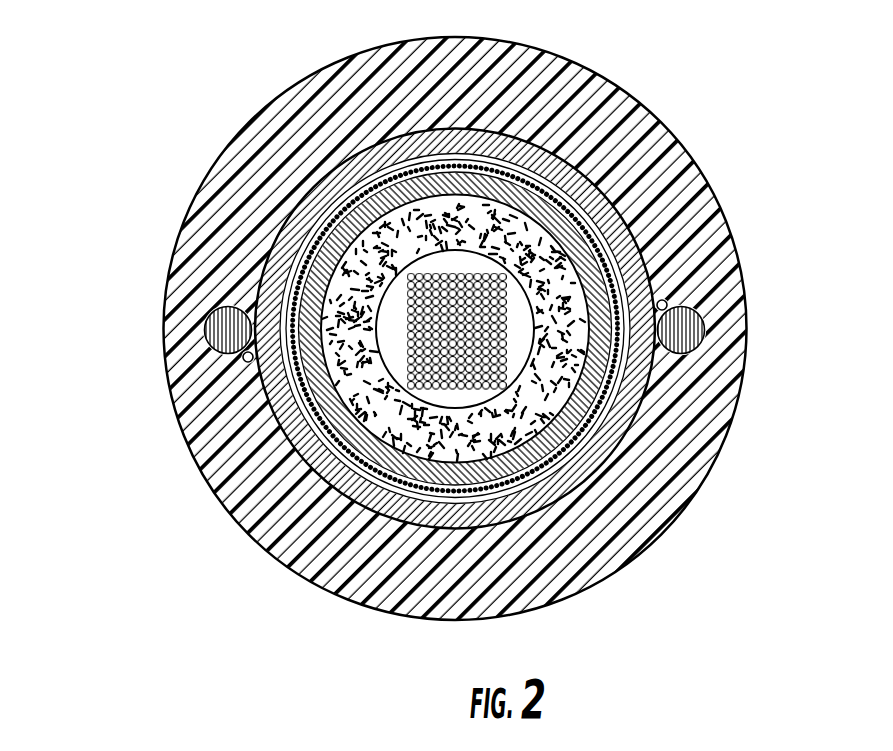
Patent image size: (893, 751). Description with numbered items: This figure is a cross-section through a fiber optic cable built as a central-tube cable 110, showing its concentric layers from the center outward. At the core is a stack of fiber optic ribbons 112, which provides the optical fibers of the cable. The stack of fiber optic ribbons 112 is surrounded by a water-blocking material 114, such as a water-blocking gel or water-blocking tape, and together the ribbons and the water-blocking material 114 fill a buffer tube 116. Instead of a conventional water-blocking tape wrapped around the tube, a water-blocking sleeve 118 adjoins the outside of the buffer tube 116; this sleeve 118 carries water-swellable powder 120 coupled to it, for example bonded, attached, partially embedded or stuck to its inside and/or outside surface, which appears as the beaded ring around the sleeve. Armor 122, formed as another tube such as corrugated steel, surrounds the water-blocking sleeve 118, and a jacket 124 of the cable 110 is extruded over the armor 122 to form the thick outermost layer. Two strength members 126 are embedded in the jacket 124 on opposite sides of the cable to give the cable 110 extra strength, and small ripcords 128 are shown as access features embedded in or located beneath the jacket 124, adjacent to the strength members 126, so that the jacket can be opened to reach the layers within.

The central-tube cable 110 is at (86, 171).
The stack of fiber optic ribbons 112 is at (445, 328).
The water-blocking material 114 is at (545, 275).
The buffer tube 116 is at (547, 450).
The water-blocking sleeve 118 is at (592, 190).
The water-swellable powder 120 is at (577, 228).
The armor 122 is at (507, 516).
The jacket 124 is at (583, 102).
The strength members 126 is at (690, 346).
The ripcords 128 is at (668, 305).